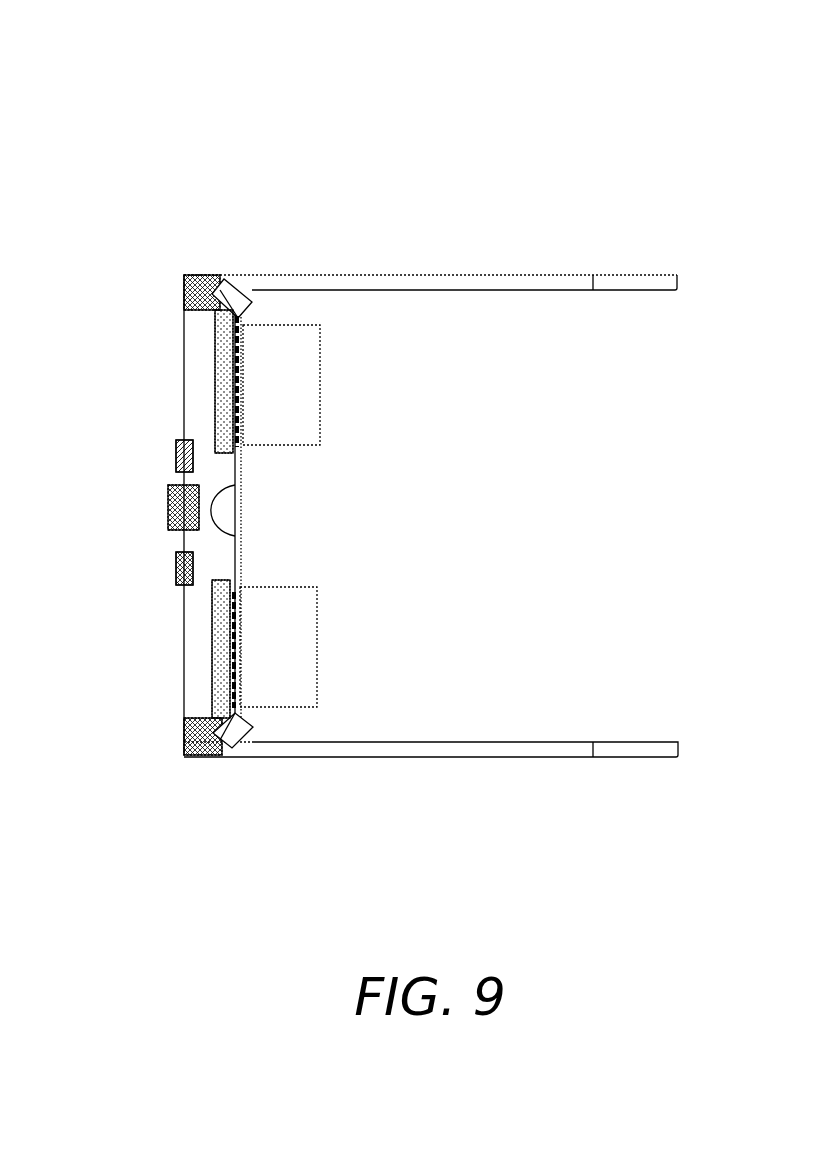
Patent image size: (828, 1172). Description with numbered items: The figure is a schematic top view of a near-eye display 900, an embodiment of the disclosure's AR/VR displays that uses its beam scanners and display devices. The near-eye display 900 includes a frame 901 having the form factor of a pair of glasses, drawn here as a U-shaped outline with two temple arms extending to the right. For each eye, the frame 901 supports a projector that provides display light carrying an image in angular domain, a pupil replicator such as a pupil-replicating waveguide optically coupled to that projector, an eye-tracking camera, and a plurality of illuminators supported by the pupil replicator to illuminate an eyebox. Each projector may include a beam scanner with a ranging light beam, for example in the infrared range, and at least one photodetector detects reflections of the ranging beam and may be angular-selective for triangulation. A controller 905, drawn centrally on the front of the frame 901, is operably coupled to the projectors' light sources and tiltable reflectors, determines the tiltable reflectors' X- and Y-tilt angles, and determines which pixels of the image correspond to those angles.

The near-eye display 900 is at (419, 128).
The frame 901 is at (558, 275).
The controller 905 is at (168, 500).